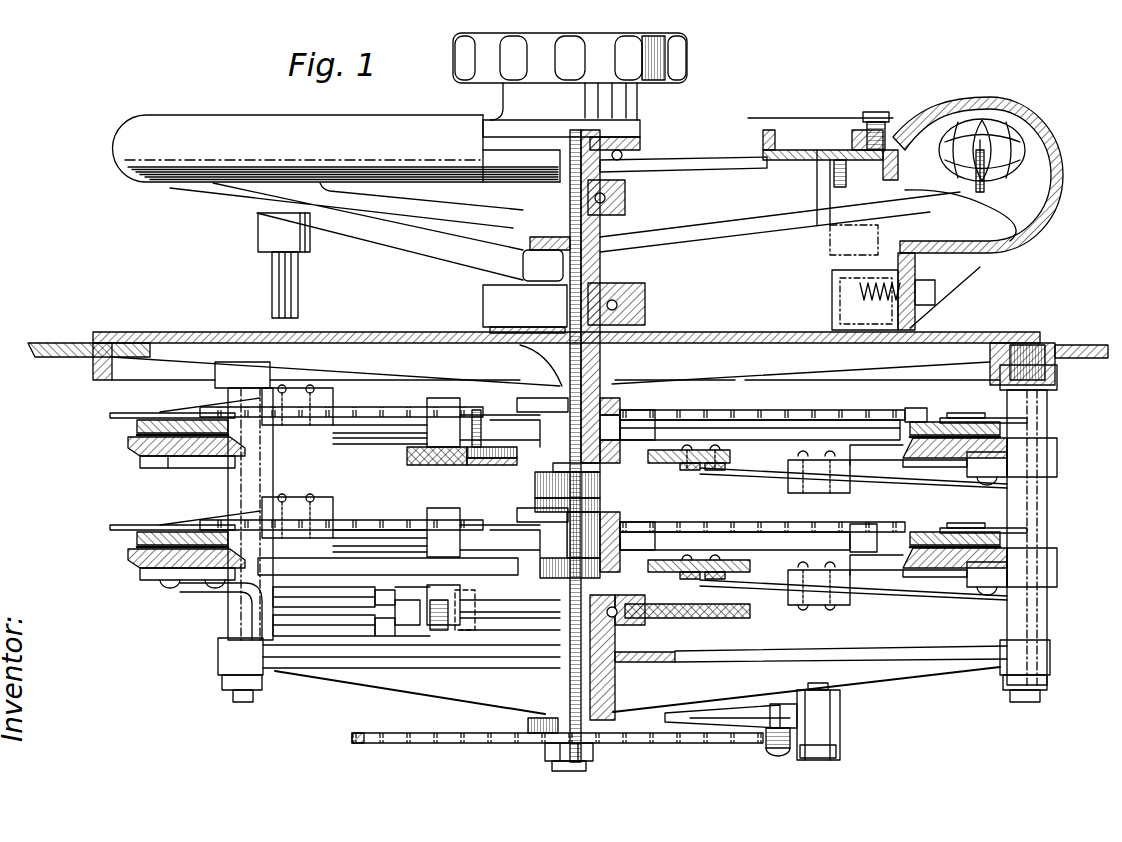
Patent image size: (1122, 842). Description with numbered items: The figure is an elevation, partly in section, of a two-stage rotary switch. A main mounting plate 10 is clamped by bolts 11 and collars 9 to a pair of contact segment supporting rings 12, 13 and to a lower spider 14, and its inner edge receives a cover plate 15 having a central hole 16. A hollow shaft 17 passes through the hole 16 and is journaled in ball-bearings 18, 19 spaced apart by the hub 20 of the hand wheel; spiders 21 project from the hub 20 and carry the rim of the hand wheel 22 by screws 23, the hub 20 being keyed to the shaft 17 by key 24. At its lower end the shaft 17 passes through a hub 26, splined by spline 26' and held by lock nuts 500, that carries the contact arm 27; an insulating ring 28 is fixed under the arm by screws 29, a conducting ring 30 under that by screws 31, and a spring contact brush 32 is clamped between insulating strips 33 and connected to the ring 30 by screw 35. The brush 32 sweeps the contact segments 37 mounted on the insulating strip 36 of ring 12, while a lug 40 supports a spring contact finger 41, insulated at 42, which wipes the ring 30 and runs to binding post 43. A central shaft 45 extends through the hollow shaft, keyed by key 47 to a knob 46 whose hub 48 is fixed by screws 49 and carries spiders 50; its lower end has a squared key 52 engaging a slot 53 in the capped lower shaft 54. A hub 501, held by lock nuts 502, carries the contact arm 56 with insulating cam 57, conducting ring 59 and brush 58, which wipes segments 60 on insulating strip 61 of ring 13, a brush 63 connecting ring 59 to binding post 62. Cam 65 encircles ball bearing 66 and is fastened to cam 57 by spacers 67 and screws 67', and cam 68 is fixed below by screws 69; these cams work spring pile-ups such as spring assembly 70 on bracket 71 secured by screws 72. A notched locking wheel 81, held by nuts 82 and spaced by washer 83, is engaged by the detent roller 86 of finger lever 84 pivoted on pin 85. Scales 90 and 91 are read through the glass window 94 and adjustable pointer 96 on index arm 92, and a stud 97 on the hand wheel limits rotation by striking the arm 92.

The collars 9 is at (228, 396).
The main mounting plate 10 is at (70, 357).
The bolts 11 is at (1047, 372).
The contact segment supporting ring 12 is at (175, 457).
The contact segment supporting ring 13 is at (128, 562).
The lower spider 14 is at (330, 672).
The cover plate 15 is at (200, 332).
The central hole 16 is at (605, 362).
The hollow shaft 17 is at (608, 378).
The ball-bearing 18 is at (627, 200).
The ball-bearing 19 is at (647, 300).
The hub of the hand wheel 20 is at (524, 265).
The spiders 21 is at (400, 232).
The hand wheel 22 is at (178, 183).
The screws 23 is at (979, 192).
The key 24 is at (570, 288).
The hub 26 is at (760, 425).
The spline 26' is at (773, 407).
The contact arm 27 is at (398, 434).
The insulating ring 28 is at (407, 462).
The screws 29 is at (475, 465).
The ring of conducting material 30 is at (692, 470).
The screws 31 is at (712, 445).
The spring contact brush 32 is at (200, 408).
The insulating strips 33 is at (333, 398).
The screw 35 is at (470, 440).
The annular strip of insulating material 36 is at (137, 427).
The contact segments 37 is at (130, 413).
The lug 40 is at (888, 465).
The spring contact finger 41 is at (735, 476).
The insulation 42 is at (788, 468).
The binding post 43 is at (980, 482).
The central shaft 45 is at (555, 345).
The knob 46 is at (630, 120).
The key 47 is at (578, 160).
The hub 48 is at (620, 150).
The screws 49 is at (624, 152).
The spiders 50 is at (740, 168).
The squared key 52 is at (535, 481).
The slot 53 is at (535, 505).
The shaft 54 is at (656, 522).
The contact arm 56 is at (392, 544).
The cam 57 is at (750, 565).
The spring contact brush 58 is at (270, 515).
The ring of conducting material 59 is at (420, 575).
The contact segments 60 is at (134, 525).
The annular strip of insulating material 61 is at (137, 540).
The binding post 62 is at (980, 574).
The brush 63 is at (805, 606).
The cam 65 is at (698, 620).
The ball bearing 66 is at (640, 628).
The spacers 67 is at (446, 603).
The screws 67' is at (483, 636).
The cam 68 is at (448, 632).
The screws 69 is at (436, 628).
The spring assembly 70 is at (325, 636).
The bracket 71 is at (258, 612).
The screws 72 is at (210, 588).
The notched locking wheel 81 is at (415, 743).
The nuts 82 is at (545, 750).
The washer 83 is at (528, 730).
The finger lever 84 is at (840, 714).
The pin 85 is at (840, 750).
The detent roller 86 is at (768, 748).
The coarse adjustment scale 90 is at (815, 215).
The fine adjustment scale 91 is at (843, 188).
The index arm 92 is at (978, 268).
The glass window 94 is at (815, 150).
The adjustable pointer 96 is at (868, 128).
The stud 97 is at (298, 285).
The lock nuts 500 is at (618, 400).
The hub 501 is at (598, 522).
The lock nuts 502 is at (616, 512).